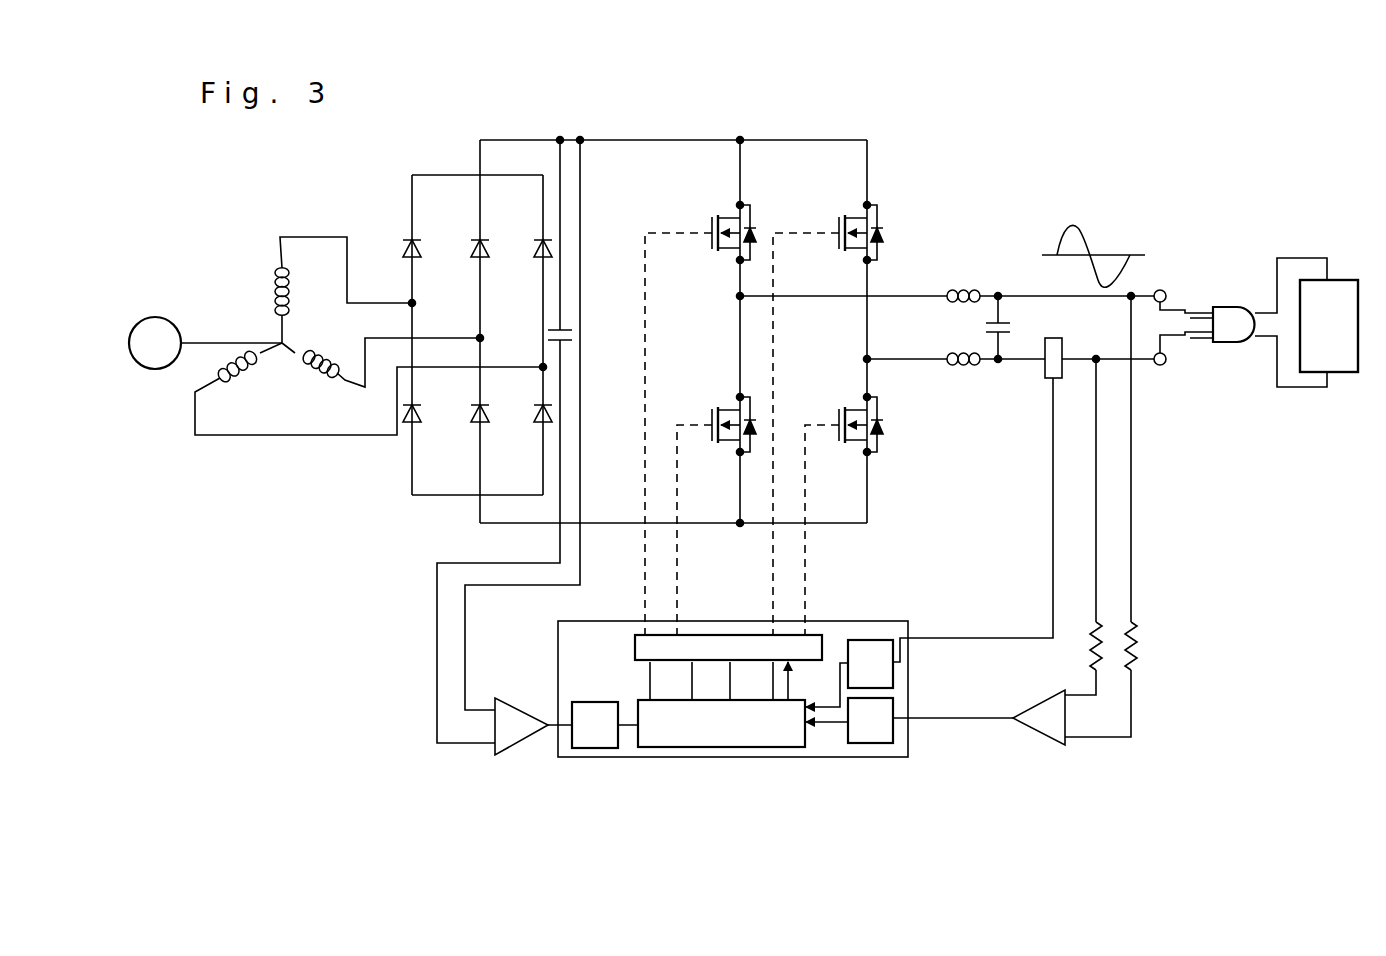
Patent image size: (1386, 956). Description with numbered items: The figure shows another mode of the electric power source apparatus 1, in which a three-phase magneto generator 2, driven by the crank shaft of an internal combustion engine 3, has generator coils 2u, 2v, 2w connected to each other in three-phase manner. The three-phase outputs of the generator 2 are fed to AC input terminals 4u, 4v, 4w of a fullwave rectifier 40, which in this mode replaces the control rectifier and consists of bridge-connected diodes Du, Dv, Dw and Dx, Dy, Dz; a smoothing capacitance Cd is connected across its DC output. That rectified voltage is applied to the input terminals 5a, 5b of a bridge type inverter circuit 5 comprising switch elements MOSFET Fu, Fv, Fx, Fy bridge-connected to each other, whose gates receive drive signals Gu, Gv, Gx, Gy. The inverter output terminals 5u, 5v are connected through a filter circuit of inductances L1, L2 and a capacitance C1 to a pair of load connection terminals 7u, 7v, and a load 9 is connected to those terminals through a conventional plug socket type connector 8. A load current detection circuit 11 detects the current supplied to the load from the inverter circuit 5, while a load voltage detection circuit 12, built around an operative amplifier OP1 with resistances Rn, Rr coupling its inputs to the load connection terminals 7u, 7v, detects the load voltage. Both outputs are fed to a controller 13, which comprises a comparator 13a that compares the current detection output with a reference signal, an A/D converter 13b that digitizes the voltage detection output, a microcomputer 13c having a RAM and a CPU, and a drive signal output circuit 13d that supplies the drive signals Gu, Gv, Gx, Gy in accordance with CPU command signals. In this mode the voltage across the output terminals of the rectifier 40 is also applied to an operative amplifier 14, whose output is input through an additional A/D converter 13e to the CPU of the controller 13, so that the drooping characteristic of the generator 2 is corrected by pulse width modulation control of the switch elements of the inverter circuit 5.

The electric power source apparatus 1 is at (922, 150).
The three-phase magneto generator 2 is at (265, 224).
The generator coil 2u is at (274, 283).
The generator coil 2v is at (318, 373).
The generator coil 2w is at (212, 370).
The internal combustion engine 3 is at (155, 317).
The three-phase AC input terminal 4u is at (410, 302).
The three-phase AC input terminal 4v is at (476, 341).
The three-phase AC input terminal 4w is at (541, 370).
The fullwave rectifier 40 is at (418, 144).
The diode Du is at (405, 246).
The diode Dv is at (476, 259).
The diode Dw is at (540, 259).
The diode Dx is at (410, 424).
The diode Dy is at (477, 424).
The diode Dz is at (540, 424).
The smoothing capacitance Cd is at (574, 333).
The bridge type inverter circuit 5 is at (848, 110).
The input terminal of the inverter circuit 5a is at (697, 138).
The input terminal of the inverter circuit 5b is at (720, 524).
The switch element MOSFET Fu is at (712, 252).
The switch element MOSFET Fv is at (840, 252).
The switch element MOSFET Fx is at (718, 452).
The switch element MOSFET Fy is at (845, 452).
The drive signal Gu is at (678, 418).
The drive signal Gv is at (806, 418).
The drive signal Gx is at (691, 515).
The drive signal Gy is at (819, 515).
The output terminal of the inverter circuit 5u is at (905, 295).
The output terminal of the inverter circuit 5v is at (918, 361).
The inductance L1 is at (960, 293).
The inductance L2 is at (960, 354).
The capacitance C1 is at (1005, 320).
The load current detection circuit 11 is at (1043, 371).
The load connection terminal 7u is at (1162, 289).
The load connection terminal 7v is at (1163, 366).
The plug socket type connector 8 is at (1227, 297).
The load 9 is at (1340, 374).
The load voltage detection circuit 12 is at (1059, 544).
The resistor Rn is at (1140, 645).
The resistor Rr is at (1105, 655).
The operative amplifier OP1 is at (1040, 746).
The controller 13 is at (891, 619).
The comparator 13a is at (880, 639).
The A/D converter 13b is at (900, 706).
The microcomputer 13c is at (740, 748).
The drive signal output circuit 13d is at (826, 635).
The A/D converter 13e is at (590, 749).
The operative amplifier 14 is at (518, 755).